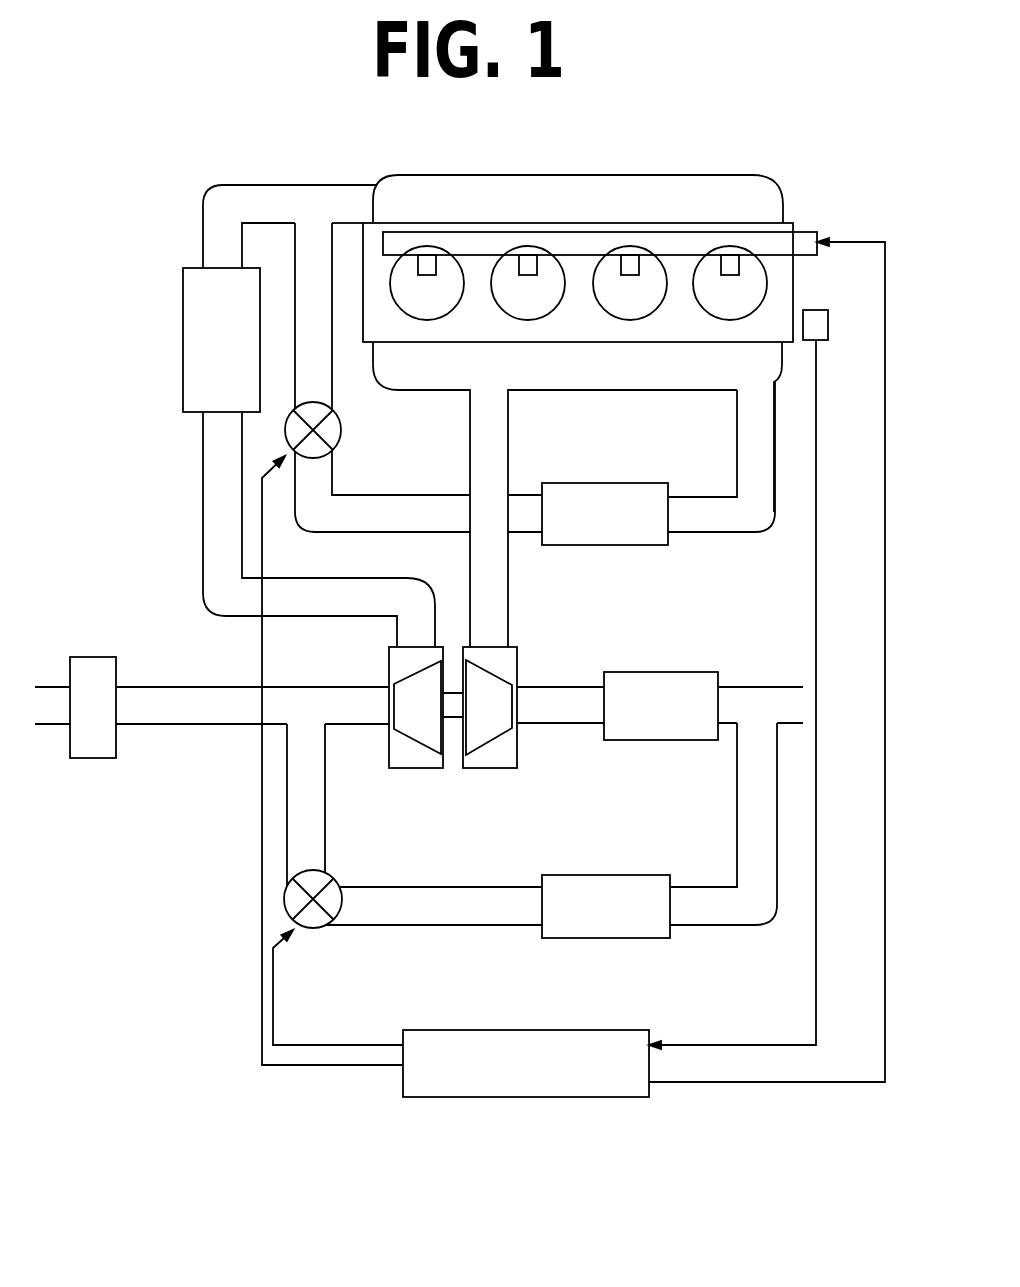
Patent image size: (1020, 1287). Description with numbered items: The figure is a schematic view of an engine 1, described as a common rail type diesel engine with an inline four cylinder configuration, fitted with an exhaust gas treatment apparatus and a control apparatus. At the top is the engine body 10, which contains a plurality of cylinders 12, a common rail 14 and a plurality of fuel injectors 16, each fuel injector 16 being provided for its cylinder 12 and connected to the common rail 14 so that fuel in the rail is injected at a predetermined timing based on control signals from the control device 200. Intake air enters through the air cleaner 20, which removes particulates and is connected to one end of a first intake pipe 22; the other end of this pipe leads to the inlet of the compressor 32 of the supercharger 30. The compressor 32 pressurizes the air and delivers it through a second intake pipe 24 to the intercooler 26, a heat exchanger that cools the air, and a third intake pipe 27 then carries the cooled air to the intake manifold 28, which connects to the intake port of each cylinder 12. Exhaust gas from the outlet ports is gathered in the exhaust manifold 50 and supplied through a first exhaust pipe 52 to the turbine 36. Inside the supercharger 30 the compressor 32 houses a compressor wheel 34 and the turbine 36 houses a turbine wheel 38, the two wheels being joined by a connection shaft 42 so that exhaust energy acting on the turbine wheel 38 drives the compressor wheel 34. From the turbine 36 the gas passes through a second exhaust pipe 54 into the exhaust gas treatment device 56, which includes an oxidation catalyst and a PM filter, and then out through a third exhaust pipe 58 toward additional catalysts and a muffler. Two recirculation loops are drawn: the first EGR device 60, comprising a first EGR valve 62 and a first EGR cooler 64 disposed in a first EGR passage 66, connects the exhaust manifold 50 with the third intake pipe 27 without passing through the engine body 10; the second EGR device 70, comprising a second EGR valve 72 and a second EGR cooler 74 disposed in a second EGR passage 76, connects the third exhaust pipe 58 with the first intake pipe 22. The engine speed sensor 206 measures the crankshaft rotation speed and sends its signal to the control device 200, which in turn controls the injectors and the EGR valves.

The engine 1 is at (810, 190).
The engine body 10 is at (797, 272).
The cylinders 12 is at (672, 285).
The common rail 14 is at (806, 231).
The fuel injectors 16 is at (420, 263).
The air cleaner 20 is at (95, 758).
The first intake pipe 22 is at (190, 686).
The second intake pipe 24 is at (203, 493).
The intercooler 26 is at (183, 340).
The third intake pipe 27 is at (272, 185).
The intake manifold 28 is at (551, 176).
The supercharger 30 is at (450, 714).
The compressor 32 is at (418, 770).
The compressor wheel 34 is at (418, 740).
The turbine 36 is at (502, 768).
The turbine wheel 38 is at (497, 675).
The connection shaft 42 is at (452, 692).
The exhaust manifold 50 is at (388, 388).
The first exhaust pipe 52 is at (510, 468).
The second exhaust pipe 54 is at (590, 686).
The exhaust gas treatment device 56 is at (660, 672).
The third exhaust pipe 58 is at (728, 686).
The first exhaust gas recirculation device 60 is at (530, 425).
The first EGR valve 62 is at (337, 452).
The first EGR cooler 64 is at (608, 547).
The first EGR passage 66 is at (385, 533).
The second exhaust gas recirculation device 70 is at (530, 873).
The second EGR valve 72 is at (315, 929).
The second EGR cooler 74 is at (626, 875).
The second EGR passage 76 is at (366, 926).
The control device 200 is at (598, 1030).
The engine speed sensor 206 is at (818, 310).